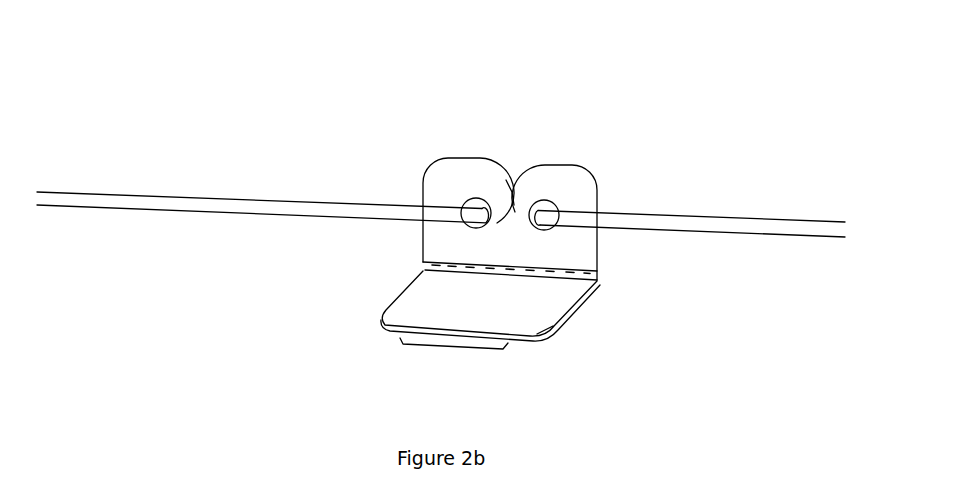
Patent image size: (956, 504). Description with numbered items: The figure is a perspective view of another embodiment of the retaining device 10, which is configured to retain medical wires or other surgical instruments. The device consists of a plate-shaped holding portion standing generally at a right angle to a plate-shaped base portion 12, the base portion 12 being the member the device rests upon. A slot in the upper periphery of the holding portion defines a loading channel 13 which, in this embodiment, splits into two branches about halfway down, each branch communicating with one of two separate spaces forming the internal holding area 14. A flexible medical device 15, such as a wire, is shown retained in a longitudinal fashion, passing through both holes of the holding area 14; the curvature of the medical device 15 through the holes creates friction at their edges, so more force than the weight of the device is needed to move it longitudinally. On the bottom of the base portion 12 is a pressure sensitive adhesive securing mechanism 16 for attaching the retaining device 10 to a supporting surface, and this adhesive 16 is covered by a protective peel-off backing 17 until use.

The retaining device 10 is at (500, 87).
The base portion 12 is at (542, 302).
The loading channel 13 is at (512, 167).
The internal holding area 14 is at (468, 200).
The medical device 15 is at (797, 217).
The adhesive securing mechanism 16 is at (537, 337).
The peel-off backing 17 is at (400, 343).